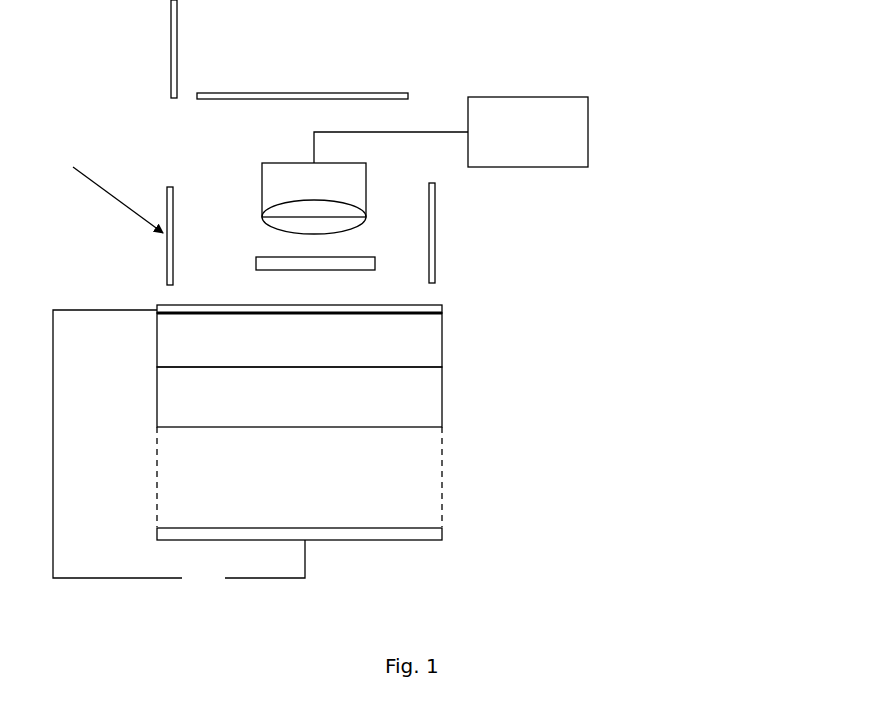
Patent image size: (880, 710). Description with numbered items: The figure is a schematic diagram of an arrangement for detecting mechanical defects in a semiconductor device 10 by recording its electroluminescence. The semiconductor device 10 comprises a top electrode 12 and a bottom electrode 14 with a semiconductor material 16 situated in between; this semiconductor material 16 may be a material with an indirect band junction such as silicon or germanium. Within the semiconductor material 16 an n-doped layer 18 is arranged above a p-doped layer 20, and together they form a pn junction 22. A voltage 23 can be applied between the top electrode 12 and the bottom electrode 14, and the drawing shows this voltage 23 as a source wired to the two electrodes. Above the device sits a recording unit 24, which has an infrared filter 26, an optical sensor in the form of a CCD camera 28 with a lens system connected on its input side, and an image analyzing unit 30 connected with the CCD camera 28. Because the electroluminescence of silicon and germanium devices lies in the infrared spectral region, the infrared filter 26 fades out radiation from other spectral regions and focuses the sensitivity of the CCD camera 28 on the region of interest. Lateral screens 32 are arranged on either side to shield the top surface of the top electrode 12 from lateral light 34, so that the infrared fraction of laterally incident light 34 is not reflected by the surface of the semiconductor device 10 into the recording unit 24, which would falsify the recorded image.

The semiconductor device 10 is at (394, 415).
The top electrode 12 is at (157, 308).
The bottom electrode 14 is at (433, 537).
The semiconductor material 16 is at (548, 323).
The n-doped layer 18 is at (437, 343).
The p-doped layer 20 is at (437, 405).
The pn junction 22 is at (307, 370).
The voltage 23 is at (179, 463).
The recording unit 24 is at (637, 207).
The infrared filter 26 is at (256, 257).
The CCD camera 28 is at (275, 162).
The image analyzing unit 30 is at (588, 140).
The lateral screens 32 is at (167, 208).
The lateral light 34 is at (115, 201).